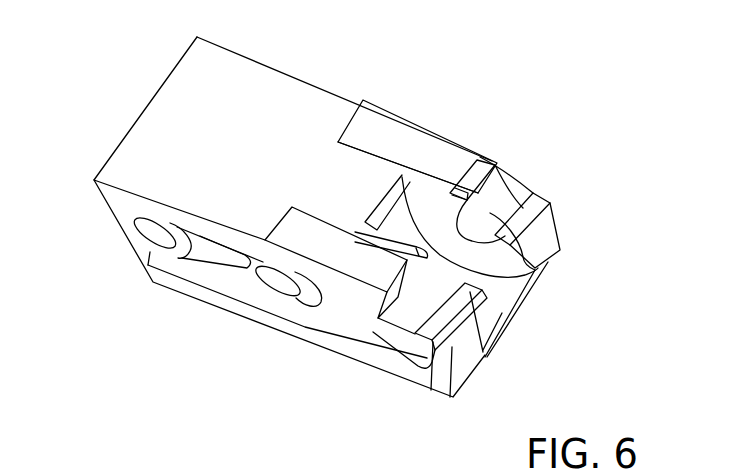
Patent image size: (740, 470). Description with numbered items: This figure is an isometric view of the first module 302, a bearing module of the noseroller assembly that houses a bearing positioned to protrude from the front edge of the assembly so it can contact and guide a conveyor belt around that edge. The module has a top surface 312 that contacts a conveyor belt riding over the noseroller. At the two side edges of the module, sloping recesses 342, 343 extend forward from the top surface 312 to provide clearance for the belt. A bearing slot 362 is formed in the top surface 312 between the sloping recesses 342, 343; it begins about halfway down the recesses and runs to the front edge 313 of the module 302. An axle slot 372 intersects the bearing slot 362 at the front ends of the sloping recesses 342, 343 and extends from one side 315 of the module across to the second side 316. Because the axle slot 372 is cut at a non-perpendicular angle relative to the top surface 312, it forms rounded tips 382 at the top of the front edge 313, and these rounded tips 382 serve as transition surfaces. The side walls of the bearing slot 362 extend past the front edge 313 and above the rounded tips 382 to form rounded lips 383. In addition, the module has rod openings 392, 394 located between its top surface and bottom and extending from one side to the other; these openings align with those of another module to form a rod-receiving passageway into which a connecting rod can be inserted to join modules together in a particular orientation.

The first module 302 is at (343, 63).
The top surface 312 is at (256, 136).
The front edge 313 is at (467, 354).
The one side 315 is at (430, 134).
The second side 316 is at (360, 298).
The sloping recess 342 is at (421, 161).
The sloping recess 343 is at (343, 264).
The bearing slot 362 is at (420, 222).
The axle slot 372 is at (506, 185).
The rounded tips 382 is at (534, 198).
The rounded lips 383 is at (540, 265).
The rod opening 392 is at (158, 235).
The rod opening 394 is at (277, 280).